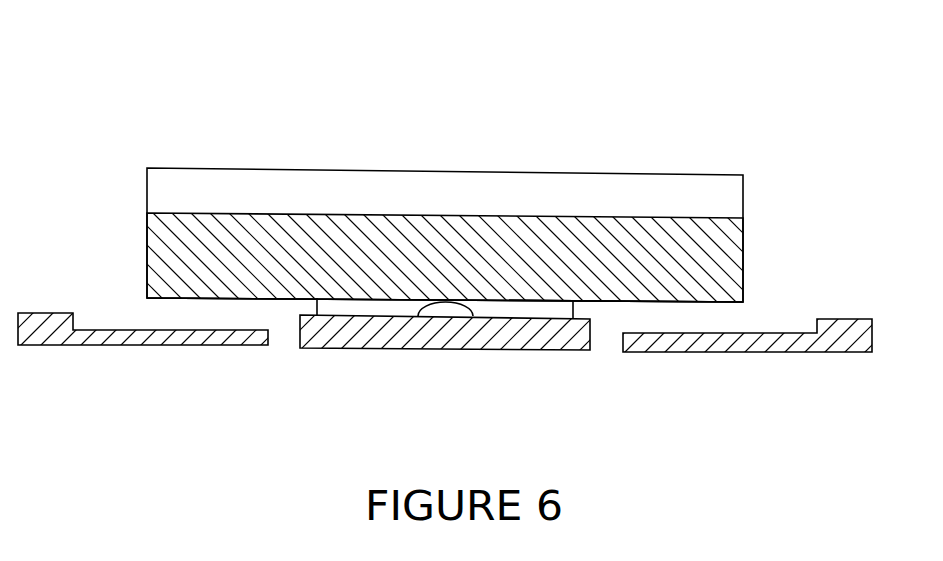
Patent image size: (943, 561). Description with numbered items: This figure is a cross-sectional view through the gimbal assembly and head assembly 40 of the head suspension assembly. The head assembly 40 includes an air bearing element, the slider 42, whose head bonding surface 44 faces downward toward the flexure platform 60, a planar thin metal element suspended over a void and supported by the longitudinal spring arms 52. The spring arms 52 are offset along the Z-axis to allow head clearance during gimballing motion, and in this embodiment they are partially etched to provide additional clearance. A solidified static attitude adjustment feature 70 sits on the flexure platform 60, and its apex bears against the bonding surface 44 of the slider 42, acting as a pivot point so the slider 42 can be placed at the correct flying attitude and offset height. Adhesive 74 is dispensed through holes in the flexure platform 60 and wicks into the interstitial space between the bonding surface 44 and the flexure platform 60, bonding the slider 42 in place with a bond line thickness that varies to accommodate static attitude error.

The head assembly 40 is at (198, 170).
The slider 42 is at (703, 253).
The head bonding surface 44 is at (178, 299).
The longitudinal spring arms 52 is at (717, 343).
The flexure platform 60 is at (542, 330).
The static attitude adjustment feature 70 is at (445, 305).
The adhesive 74 is at (563, 312).